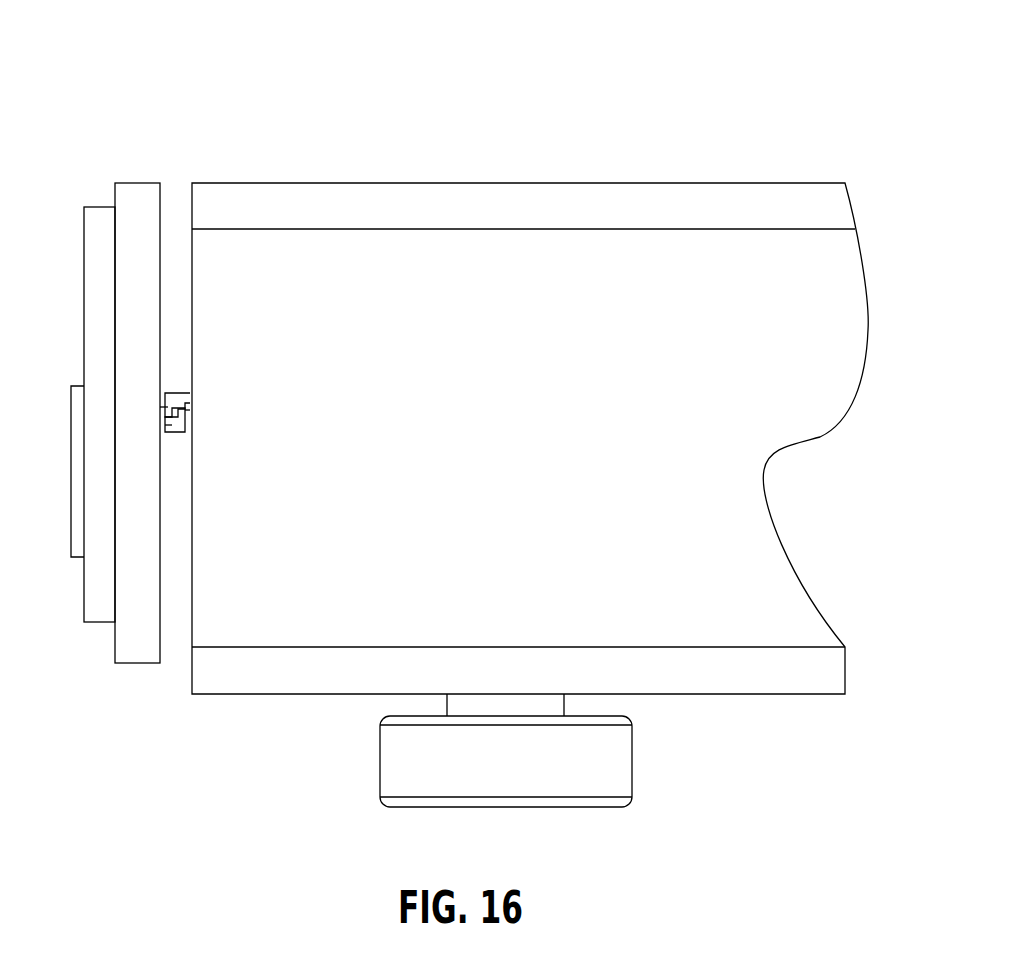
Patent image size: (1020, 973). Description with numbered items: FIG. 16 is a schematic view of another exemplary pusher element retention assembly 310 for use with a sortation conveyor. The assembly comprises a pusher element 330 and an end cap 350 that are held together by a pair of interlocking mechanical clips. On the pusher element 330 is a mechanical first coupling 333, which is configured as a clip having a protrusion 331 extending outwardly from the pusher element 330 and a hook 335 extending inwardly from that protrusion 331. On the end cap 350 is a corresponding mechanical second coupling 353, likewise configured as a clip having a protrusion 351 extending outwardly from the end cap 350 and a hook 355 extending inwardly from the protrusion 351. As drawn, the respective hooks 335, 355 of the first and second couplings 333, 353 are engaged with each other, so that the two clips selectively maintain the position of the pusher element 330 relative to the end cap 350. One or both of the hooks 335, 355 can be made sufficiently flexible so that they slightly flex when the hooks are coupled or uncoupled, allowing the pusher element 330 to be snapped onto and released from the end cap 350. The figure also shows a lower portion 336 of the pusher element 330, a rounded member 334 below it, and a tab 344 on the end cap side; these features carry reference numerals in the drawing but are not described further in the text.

The pusher element retention assembly 310 is at (105, 63).
The pusher element 330 is at (429, 183).
The protrusion 331 is at (184, 398).
The first coupling 333 is at (173, 391).
The band attachment 334 is at (612, 769).
The hook 335 is at (168, 410).
The housing base 336 is at (808, 668).
The tab 344 is at (76, 431).
The end cap 350 is at (123, 197).
The protrusion 351 is at (163, 432).
The second coupling 353 is at (172, 437).
The hook 355 is at (186, 413).